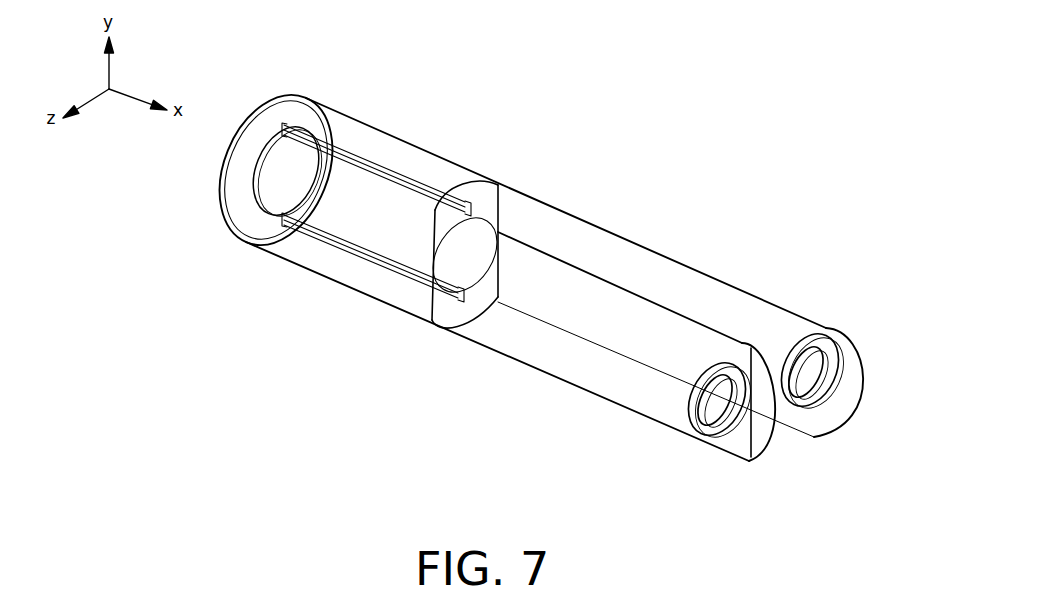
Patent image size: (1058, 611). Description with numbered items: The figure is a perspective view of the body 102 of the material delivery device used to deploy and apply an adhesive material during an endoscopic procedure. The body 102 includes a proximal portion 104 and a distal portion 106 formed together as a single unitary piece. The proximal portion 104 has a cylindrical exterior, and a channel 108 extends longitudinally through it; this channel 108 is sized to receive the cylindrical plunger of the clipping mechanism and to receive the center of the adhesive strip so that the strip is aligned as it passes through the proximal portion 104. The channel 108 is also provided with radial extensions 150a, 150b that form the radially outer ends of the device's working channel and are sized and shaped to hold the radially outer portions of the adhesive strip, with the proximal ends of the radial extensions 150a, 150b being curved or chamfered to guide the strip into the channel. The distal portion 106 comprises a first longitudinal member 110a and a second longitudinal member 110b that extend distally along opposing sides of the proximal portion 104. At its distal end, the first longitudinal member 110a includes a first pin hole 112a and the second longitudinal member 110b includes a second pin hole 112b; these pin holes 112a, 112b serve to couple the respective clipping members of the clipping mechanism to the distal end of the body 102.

The body 102 is at (842, 131).
The proximal portion 104 is at (491, 100).
The distal portion 106 is at (647, 186).
The channel 108 is at (373, 222).
The first longitudinal member 110a is at (705, 274).
The second longitudinal member 110b is at (570, 362).
The first pin hole 112a is at (815, 362).
The second pin hole 112b is at (723, 405).
The radial extension 150a is at (285, 134).
The radial extension 150b is at (284, 221).